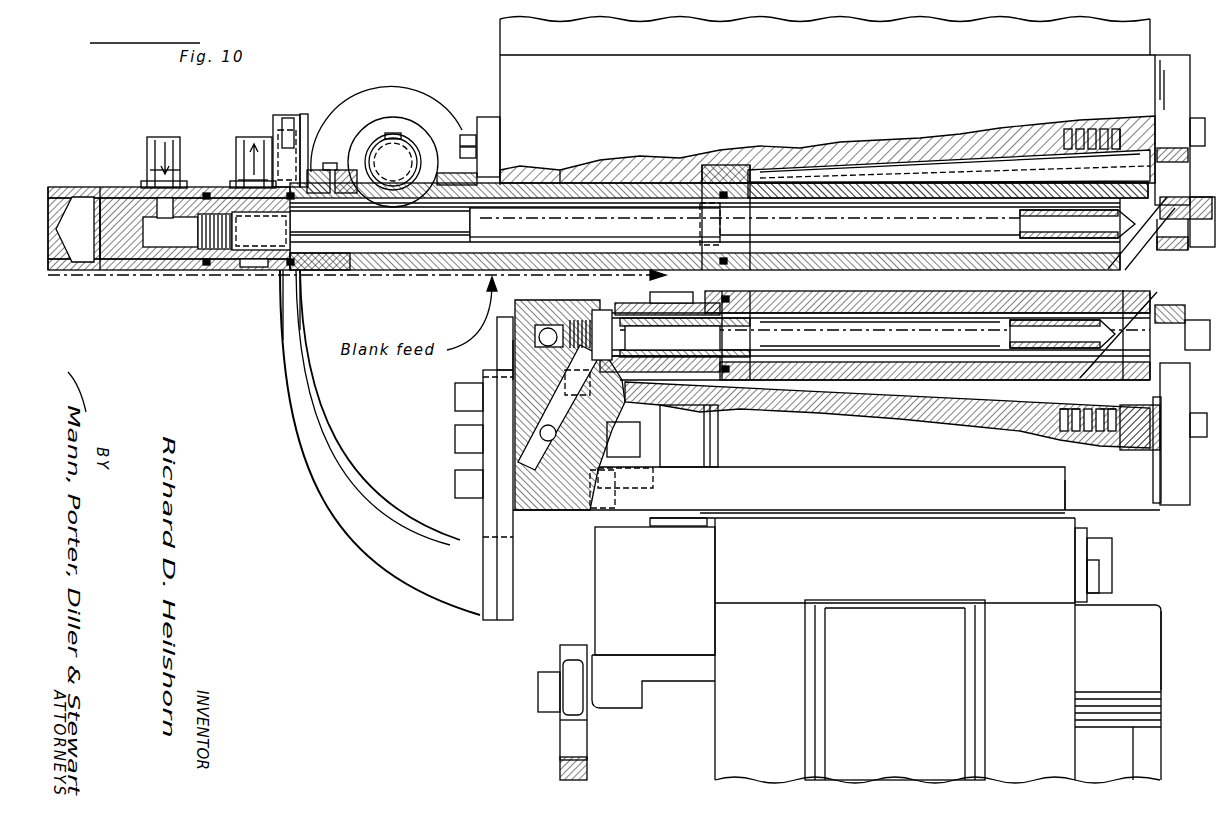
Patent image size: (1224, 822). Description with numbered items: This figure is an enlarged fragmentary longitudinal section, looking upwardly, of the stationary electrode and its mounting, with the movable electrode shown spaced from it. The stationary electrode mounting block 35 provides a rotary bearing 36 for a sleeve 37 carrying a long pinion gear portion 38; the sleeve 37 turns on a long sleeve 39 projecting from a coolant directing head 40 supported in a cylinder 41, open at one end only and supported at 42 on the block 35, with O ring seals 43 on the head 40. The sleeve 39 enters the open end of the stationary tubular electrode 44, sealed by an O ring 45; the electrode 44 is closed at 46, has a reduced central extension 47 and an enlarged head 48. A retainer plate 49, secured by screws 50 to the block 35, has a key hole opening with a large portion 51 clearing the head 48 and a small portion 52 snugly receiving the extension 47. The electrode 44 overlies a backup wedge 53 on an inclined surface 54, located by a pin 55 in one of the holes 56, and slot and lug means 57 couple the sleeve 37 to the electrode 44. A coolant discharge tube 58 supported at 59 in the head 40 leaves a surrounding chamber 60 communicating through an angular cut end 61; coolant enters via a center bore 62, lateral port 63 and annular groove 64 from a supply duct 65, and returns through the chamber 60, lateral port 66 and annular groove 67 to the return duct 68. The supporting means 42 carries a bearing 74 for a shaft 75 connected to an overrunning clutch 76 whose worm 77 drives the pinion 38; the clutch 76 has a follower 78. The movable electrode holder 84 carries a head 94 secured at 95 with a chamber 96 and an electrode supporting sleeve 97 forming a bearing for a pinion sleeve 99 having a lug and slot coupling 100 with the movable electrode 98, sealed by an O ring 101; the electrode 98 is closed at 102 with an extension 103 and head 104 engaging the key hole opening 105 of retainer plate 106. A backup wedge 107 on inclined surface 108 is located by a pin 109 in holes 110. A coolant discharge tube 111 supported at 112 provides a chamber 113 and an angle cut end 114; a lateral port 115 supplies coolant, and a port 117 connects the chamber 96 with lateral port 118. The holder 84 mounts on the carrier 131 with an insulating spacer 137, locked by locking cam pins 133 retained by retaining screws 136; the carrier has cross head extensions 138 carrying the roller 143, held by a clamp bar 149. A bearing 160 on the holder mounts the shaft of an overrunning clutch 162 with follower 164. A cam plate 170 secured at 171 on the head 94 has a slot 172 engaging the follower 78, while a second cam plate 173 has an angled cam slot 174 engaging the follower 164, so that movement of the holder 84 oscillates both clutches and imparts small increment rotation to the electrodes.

The stationary electrode mounting block 35 is at (500, 67).
The rotary bearing 36 is at (640, 178).
The sleeve 37 is at (590, 172).
The pinion gear portion 38 is at (440, 176).
The long sleeve 39 is at (527, 253).
The coolant directing head 40 is at (108, 262).
The cylinder 41 is at (70, 270).
The supporting means 42 is at (480, 128).
The O ring seals 43 is at (208, 267).
The stationary tubular electrode 44 is at (924, 190).
The O ring 45 is at (723, 188).
The closed end 46 is at (1150, 192).
The reduced central extension 47 is at (1166, 206).
The enlarged head 48 is at (1203, 197).
The retainer plate 49 is at (1170, 64).
The screws 50 is at (1198, 118).
The large portion of key hole opening 51 is at (1172, 148).
The small portion of key hole opening 52 is at (1172, 250).
The backup wedge 53 is at (850, 168).
The inclined surface 54 is at (790, 172).
The pin 55 is at (1118, 130).
The holes 56 is at (1081, 128).
The slot and lug means 57 is at (700, 223).
The coolant discharge tube 58 is at (349, 240).
The tube support 59 is at (218, 250).
The surrounding chamber 60 is at (458, 252).
The angular cut end 61 is at (1103, 228).
The center bore 62 is at (160, 247).
The lateral port 63 is at (150, 172).
The annular groove 64 is at (152, 152).
The coolant supply duct 65 is at (170, 133).
The lateral port 66 is at (238, 181).
The annular groove 67 is at (240, 166).
The return duct 68 is at (250, 133).
The bearing 74 is at (386, 124).
The shaft 75 is at (400, 140).
The overrunning clutch 76 is at (371, 93).
The worm 77 is at (372, 143).
The follower 78 is at (302, 125).
The movable electrode holder 84 is at (775, 512).
The electrode supporting and coolant circulating head 94 is at (530, 306).
The head securing means 95 is at (578, 500).
The chamber 96 is at (600, 310).
The electrode supporting sleeve 97 is at (640, 304).
The movable electrode 98 is at (895, 300).
The pinion sleeve 99 is at (665, 295).
The lug and slot drive coupling 100 is at (706, 335).
The O ring seal 101 is at (727, 297).
The closed end 102 is at (1140, 300).
The reduced central extension 103 is at (1166, 306).
The head enlargement 104 is at (1195, 320).
The key hole opening 105 is at (1172, 377).
The retainer plate 106 is at (1175, 505).
The backup wedge 107 is at (897, 390).
The inclined surface 108 is at (976, 411).
The pin 109 is at (1100, 413).
The holes 110 is at (1056, 412).
The coolant discharge tube 111 is at (822, 330).
The tube support 112 is at (580, 320).
The surrounding chamber 113 is at (957, 314).
The angle cut end 114 is at (1062, 334).
The lateral port 115 is at (550, 323).
The port 117 is at (513, 362).
The lateral port 118 is at (530, 437).
The electrode moving carrier 131 is at (869, 520).
The locking cam pin 133 is at (1112, 580).
The retaining screw 136 is at (1112, 560).
The insulating spacer 137 is at (991, 515).
The cross head extensions 138 is at (1060, 662).
The roller 143 is at (920, 612).
The clamp bar 149 is at (1153, 663).
The bearing 160 is at (714, 439).
The overrunning clutch 162 is at (604, 580).
The follower 164 is at (568, 694).
The cam plate 170 is at (283, 115).
The cam plate securing means 171 is at (458, 393).
The slot 172 is at (279, 126).
The second cam plate 173 is at (560, 765).
The angled cam slot 174 is at (567, 738).